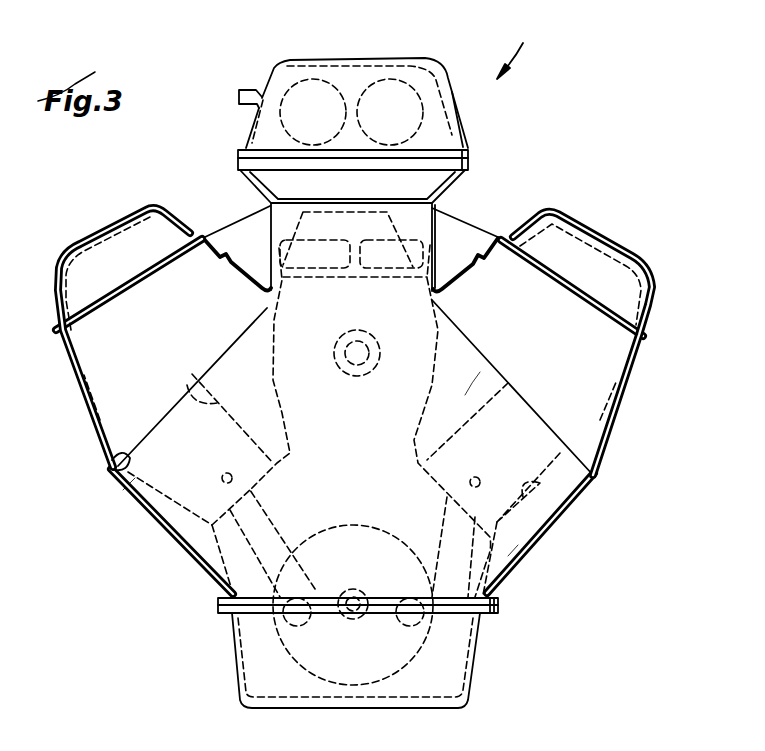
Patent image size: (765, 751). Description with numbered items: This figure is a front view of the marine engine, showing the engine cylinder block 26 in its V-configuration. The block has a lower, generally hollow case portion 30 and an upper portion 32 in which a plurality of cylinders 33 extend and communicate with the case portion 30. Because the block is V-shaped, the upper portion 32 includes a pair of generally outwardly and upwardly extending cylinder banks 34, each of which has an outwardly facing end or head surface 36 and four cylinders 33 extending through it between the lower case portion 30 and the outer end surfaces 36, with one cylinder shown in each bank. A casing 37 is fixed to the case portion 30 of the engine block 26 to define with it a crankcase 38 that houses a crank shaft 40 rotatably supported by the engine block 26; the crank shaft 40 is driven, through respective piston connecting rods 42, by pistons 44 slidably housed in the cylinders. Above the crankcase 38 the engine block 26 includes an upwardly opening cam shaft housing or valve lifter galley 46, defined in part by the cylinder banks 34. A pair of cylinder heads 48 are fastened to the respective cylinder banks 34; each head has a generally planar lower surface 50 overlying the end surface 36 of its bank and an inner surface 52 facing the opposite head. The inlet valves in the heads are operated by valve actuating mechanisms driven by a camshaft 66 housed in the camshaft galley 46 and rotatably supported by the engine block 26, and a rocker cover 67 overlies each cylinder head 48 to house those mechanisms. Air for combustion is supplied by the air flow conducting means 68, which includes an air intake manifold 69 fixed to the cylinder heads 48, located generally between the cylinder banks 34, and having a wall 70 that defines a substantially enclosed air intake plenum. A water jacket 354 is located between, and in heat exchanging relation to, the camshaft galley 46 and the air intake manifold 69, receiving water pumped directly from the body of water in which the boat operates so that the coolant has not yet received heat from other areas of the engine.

The engine cylinder block 26 is at (396, 400).
The lower case portion 30 is at (536, 565).
The upper portion 32 is at (435, 421).
The cylinders 33 is at (364, 412).
The cylinder banks 34 is at (350, 500).
The outwardly facing end surfaces 36 is at (351, 449).
The casing 37 is at (371, 631).
The crankcase 38 is at (333, 660).
The crank shaft 40 is at (353, 605).
The piston connecting rods 42 is at (322, 529).
The pistons 44 is at (357, 558).
The cam shaft housing or valve lifter galley 46 is at (355, 272).
The cylinder heads 48 is at (353, 416).
The lower surfaces 50 is at (287, 413).
The inner surfaces 52 is at (351, 245).
The camshaft 66 is at (346, 369).
The rocker cover 67 is at (341, 341).
The means for conducting a flow of air 68 is at (517, 50).
The air intake manifold 69 is at (345, 87).
The wall 70 is at (353, 111).
The water jacket 354 is at (351, 280).